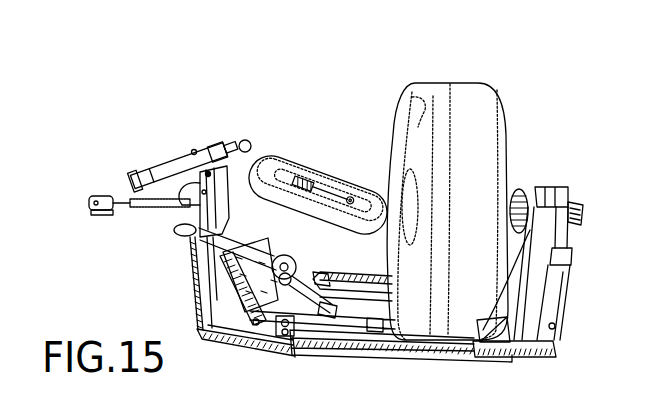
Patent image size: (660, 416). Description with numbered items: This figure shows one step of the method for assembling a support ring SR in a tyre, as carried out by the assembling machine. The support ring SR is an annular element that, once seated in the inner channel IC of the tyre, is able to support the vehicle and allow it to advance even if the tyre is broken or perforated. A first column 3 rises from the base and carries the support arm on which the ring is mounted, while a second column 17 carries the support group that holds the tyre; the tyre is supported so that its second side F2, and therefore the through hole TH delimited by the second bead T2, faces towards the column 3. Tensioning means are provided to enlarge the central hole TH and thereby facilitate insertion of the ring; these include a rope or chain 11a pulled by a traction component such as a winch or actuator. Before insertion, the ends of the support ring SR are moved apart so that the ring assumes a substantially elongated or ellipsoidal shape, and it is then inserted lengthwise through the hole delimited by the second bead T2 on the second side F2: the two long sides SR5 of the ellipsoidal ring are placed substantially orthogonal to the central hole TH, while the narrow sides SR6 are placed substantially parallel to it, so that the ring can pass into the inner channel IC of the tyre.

The inner channel IC is at (412, 97).
The second side F2 is at (420, 124).
The second bead T2 is at (430, 210).
The long sides SR5 is at (323, 190).
The support ring SR is at (277, 147).
The narrow sides SR6 is at (380, 208).
The second column 17 is at (543, 275).
The rope or chain 11a is at (190, 252).
The first column 3 is at (190, 290).
The central hole TH is at (401, 237).